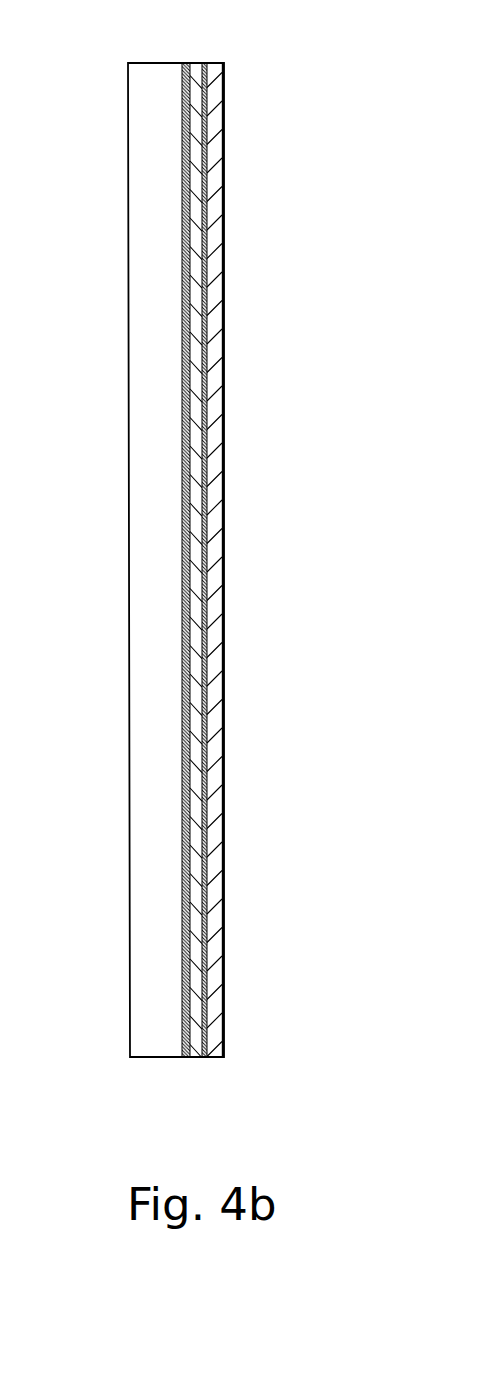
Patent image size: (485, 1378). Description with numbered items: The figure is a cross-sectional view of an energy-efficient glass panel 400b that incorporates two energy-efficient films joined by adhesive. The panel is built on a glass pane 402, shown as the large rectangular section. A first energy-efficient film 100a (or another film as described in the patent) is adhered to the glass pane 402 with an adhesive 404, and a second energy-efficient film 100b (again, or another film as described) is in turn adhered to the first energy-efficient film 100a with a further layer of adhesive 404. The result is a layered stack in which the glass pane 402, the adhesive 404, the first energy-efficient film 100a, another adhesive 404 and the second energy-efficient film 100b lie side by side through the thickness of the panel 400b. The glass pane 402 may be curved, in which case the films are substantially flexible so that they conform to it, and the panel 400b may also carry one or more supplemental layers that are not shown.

The energy-efficient glass panel 400b is at (262, 165).
The glass pane 402 is at (143, 207).
The adhesive 404 is at (193, 62).
The first energy-efficient film 100a is at (197, 1058).
The second energy-efficient film 100b is at (227, 1023).